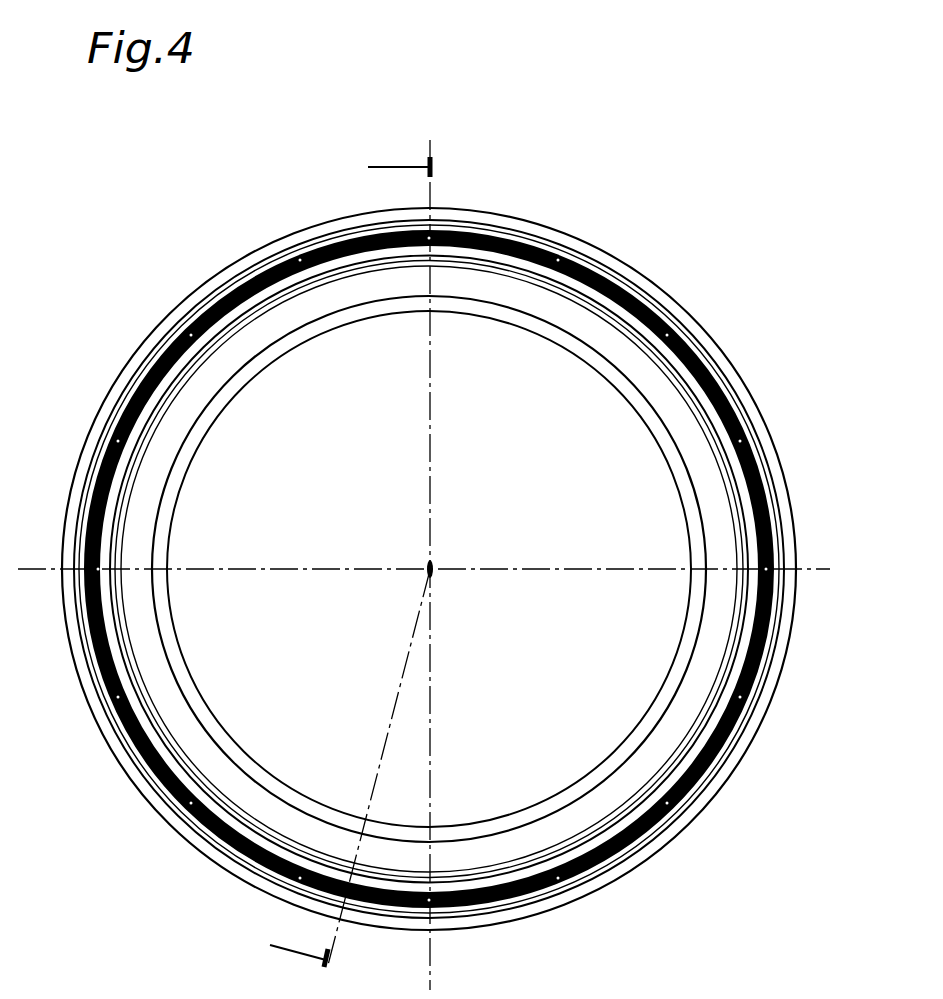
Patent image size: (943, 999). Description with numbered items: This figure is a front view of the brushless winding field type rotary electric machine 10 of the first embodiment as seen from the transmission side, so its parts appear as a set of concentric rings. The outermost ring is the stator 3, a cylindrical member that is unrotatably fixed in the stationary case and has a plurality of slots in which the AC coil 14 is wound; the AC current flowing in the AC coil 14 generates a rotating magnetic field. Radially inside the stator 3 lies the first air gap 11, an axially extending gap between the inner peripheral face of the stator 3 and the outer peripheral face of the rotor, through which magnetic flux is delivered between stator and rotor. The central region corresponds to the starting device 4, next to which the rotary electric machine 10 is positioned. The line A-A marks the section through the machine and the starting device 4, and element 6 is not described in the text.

The rotary electric machine 10 is at (539, 219).
The stator 3 is at (765, 412).
The AC coil 14 is at (717, 373).
The first air gap 11 is at (650, 328).
The spacer ring 6 is at (558, 305).
The starting device 4 is at (662, 532).